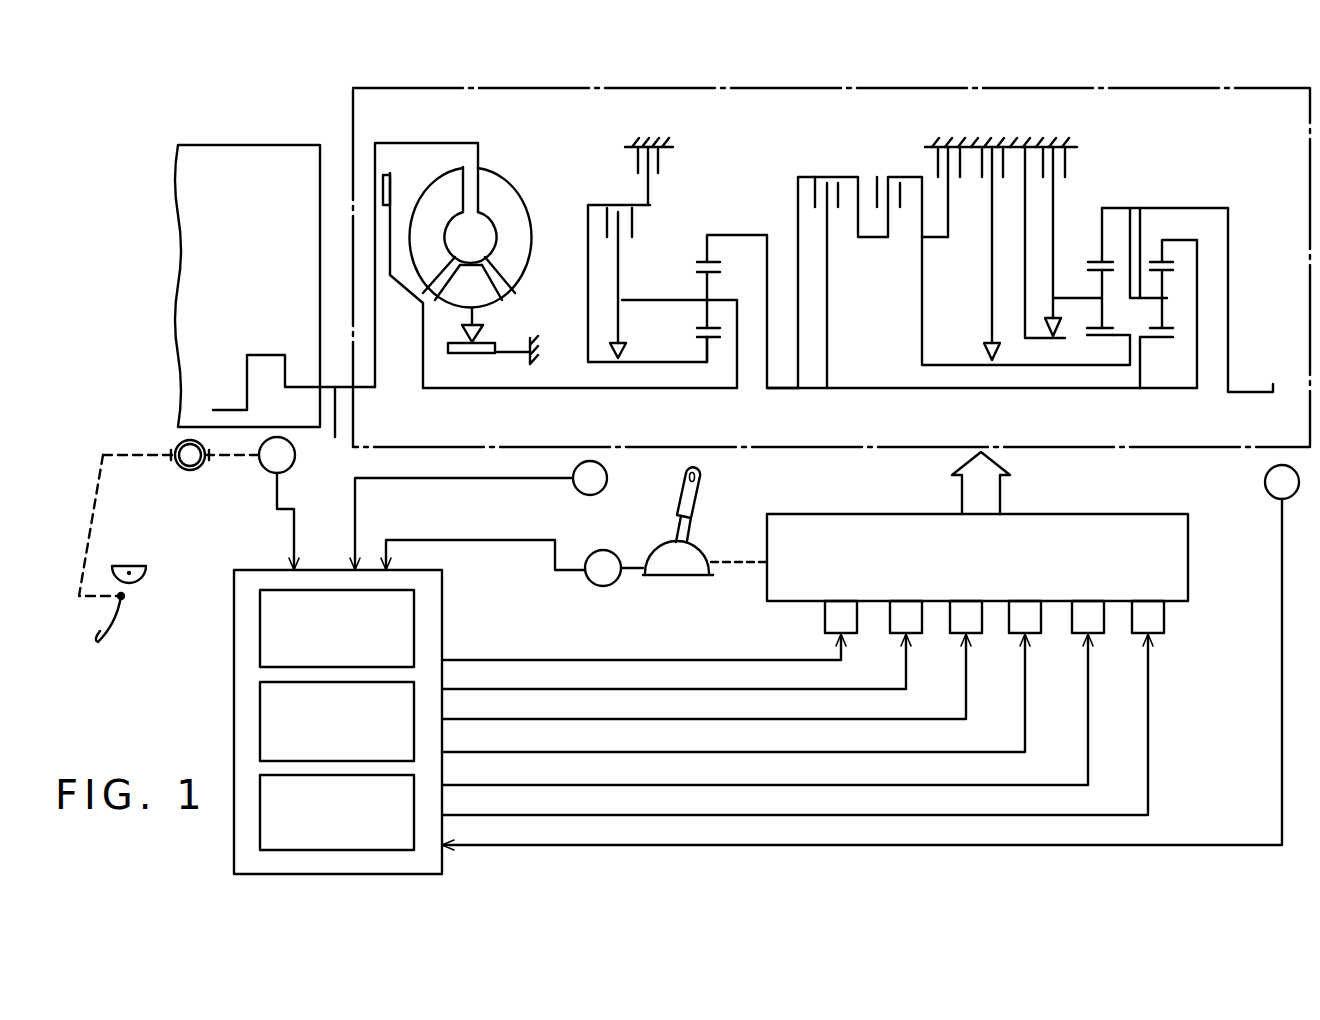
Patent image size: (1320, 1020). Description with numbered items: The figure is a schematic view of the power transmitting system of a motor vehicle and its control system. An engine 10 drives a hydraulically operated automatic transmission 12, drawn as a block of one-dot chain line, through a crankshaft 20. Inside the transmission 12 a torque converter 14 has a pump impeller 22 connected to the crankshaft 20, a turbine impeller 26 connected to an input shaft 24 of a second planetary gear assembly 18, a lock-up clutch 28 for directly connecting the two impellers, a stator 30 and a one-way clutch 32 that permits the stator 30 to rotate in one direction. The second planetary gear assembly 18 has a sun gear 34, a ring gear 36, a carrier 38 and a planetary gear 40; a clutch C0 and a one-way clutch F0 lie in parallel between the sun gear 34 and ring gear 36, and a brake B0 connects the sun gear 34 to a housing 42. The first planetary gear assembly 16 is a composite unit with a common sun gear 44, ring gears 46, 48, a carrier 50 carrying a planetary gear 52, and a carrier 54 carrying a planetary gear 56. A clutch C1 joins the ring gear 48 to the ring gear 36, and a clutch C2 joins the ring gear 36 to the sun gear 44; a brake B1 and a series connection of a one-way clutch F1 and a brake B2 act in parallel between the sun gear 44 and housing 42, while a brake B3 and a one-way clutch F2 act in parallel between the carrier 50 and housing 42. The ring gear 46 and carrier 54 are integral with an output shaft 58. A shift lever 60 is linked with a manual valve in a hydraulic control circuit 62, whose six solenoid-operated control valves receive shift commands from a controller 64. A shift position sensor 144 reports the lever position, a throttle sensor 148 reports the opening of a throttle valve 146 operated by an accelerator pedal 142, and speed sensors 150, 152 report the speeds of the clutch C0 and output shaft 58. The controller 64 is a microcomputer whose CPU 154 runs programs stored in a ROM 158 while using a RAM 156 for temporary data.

The engine 10 is at (222, 158).
The automatic transmission 12 is at (468, 86).
The torque converter 14 is at (495, 177).
The first planetary gear assembly 16 is at (1026, 235).
The second planetary gear assembly 18 is at (832, 236).
The crankshaft 20 is at (331, 431).
The pump impeller 22 is at (399, 142).
The input shaft 24 is at (600, 389).
The turbine impeller 26 is at (423, 338).
The lock-up clutch 28 is at (390, 196).
The stator 30 is at (487, 300).
The one-way clutch 32 is at (483, 338).
The sun gear 34 is at (717, 340).
The ring gear 36 is at (698, 262).
The carrier 38 is at (635, 298).
The planetary gear 40 is at (697, 327).
The housing 42 is at (650, 140).
The common sun gear 44 is at (1147, 340).
The ring gear 46 is at (1090, 262).
The ring gear 48 is at (1152, 257).
The carrier 50 is at (1070, 298).
The planetary gear 52 is at (1083, 325).
The carrier 54 is at (1142, 297).
The planetary gear 56 is at (1175, 320).
The output shaft 58 is at (1263, 385).
The shift lever 60 is at (697, 498).
The hydraulic control circuit 62 is at (1143, 528).
The controller 64 is at (343, 730).
The accelerator pedal 142 is at (118, 614).
The shift position sensor 144 is at (601, 578).
The throttle valve 146 is at (183, 467).
The throttle sensor 148 is at (259, 456).
The speed sensor 150 is at (577, 472).
The speed sensor 152 is at (1265, 482).
The central processing unit 154 is at (402, 650).
The random-access memory 156 is at (265, 719).
The read-only memory 158 is at (398, 839).
The brake B0 is at (665, 167).
The clutch C0 is at (633, 222).
The one-way clutch F0 is at (628, 352).
The brake B1 is at (918, 152).
The brake B2 is at (980, 173).
The brake B3 is at (1085, 160).
The clutch C1 is at (842, 193).
The clutch C2 is at (902, 193).
The one-way clutch F1 is at (985, 355).
The one-way clutch F2 is at (1047, 340).